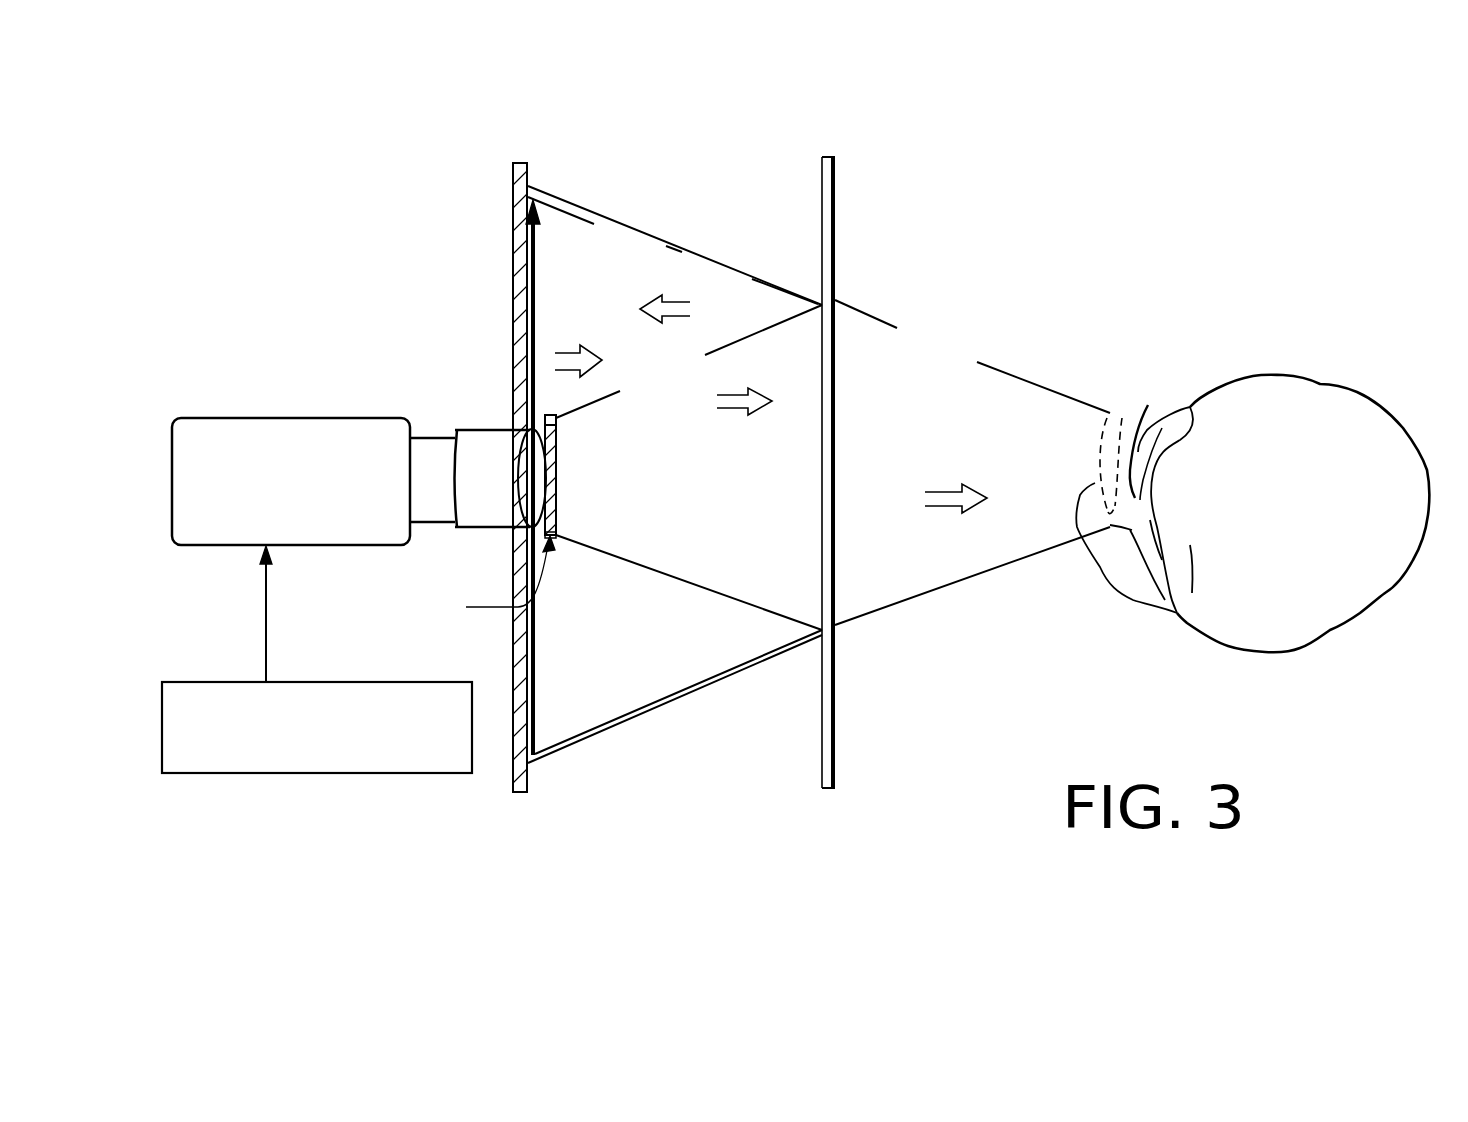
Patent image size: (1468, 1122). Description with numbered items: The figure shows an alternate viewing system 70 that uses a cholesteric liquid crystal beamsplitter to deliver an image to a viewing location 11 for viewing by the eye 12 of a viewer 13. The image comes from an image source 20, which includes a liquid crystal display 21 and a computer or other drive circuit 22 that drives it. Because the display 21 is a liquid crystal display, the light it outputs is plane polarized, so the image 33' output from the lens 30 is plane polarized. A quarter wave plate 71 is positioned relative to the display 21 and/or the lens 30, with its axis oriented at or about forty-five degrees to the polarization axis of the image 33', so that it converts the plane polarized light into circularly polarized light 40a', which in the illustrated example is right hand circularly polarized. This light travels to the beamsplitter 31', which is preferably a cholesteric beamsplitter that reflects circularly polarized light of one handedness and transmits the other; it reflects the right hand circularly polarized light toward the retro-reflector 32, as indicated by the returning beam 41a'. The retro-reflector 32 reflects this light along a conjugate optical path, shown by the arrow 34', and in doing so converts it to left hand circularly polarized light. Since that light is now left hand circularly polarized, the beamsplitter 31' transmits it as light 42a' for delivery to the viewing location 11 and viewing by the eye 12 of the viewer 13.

The image source 20 is at (438, 338).
The liquid crystal display 21 is at (172, 457).
The computer or other drive circuit 22 is at (198, 682).
The lens 30 is at (539, 458).
The beamsplitter 31' is at (784, 472).
The retro-reflector 32 is at (527, 164).
The image 33' is at (474, 534).
The reflected beam arrow 34' is at (559, 477).
The light 40a' is at (737, 427).
The returning light beam direction 41a' is at (698, 319).
The light 42a' is at (767, 413).
The viewing system 70 is at (1131, 199).
The quarter wave plate 71 is at (557, 514).
The viewing location 11 is at (1117, 420).
The eye 12 is at (1138, 447).
The viewer 13 is at (1403, 437).